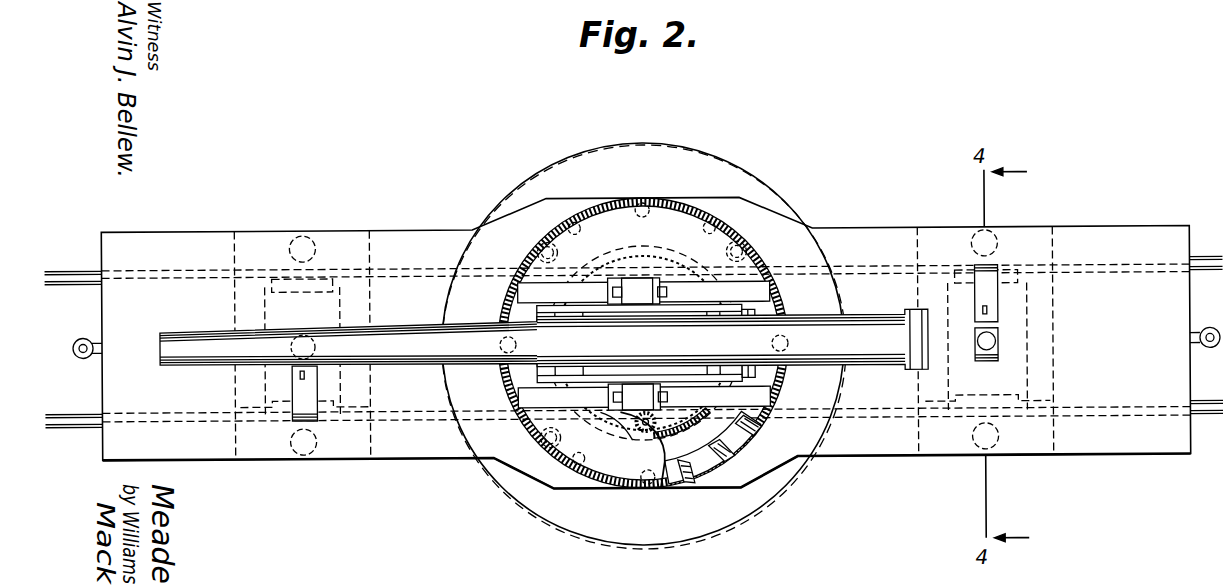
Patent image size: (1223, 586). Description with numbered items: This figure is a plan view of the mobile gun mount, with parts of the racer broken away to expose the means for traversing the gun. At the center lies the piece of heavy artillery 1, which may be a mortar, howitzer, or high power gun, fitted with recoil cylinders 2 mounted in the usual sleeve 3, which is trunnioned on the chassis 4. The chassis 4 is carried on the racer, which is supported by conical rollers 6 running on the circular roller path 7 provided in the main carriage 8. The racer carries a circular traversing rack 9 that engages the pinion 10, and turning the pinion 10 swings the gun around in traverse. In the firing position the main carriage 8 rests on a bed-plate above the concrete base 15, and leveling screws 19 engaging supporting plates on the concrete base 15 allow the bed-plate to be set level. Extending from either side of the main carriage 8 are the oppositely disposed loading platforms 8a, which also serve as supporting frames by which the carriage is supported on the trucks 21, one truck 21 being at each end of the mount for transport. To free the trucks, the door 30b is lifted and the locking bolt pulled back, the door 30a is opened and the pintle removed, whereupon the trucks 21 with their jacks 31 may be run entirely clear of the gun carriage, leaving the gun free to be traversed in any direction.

The piece of heavy artillery 1 is at (867, 315).
The recoil cylinders 2 is at (537, 322).
The sleeve 3 is at (645, 344).
The chassis 4 is at (752, 282).
The conical rollers 6 is at (731, 450).
The circular roller path 7 is at (703, 480).
The main carriage 8 is at (632, 487).
The circular traversing rack 9 is at (658, 437).
The pinion 10 is at (640, 430).
The concrete base 15 is at (765, 176).
The leveling screws 19 is at (753, 230).
The trucks 21 is at (930, 444).
The door 30a is at (994, 343).
The door 30b is at (1062, 298).
The jacks 31 is at (1000, 447).
The loading platforms 8a is at (1110, 200).